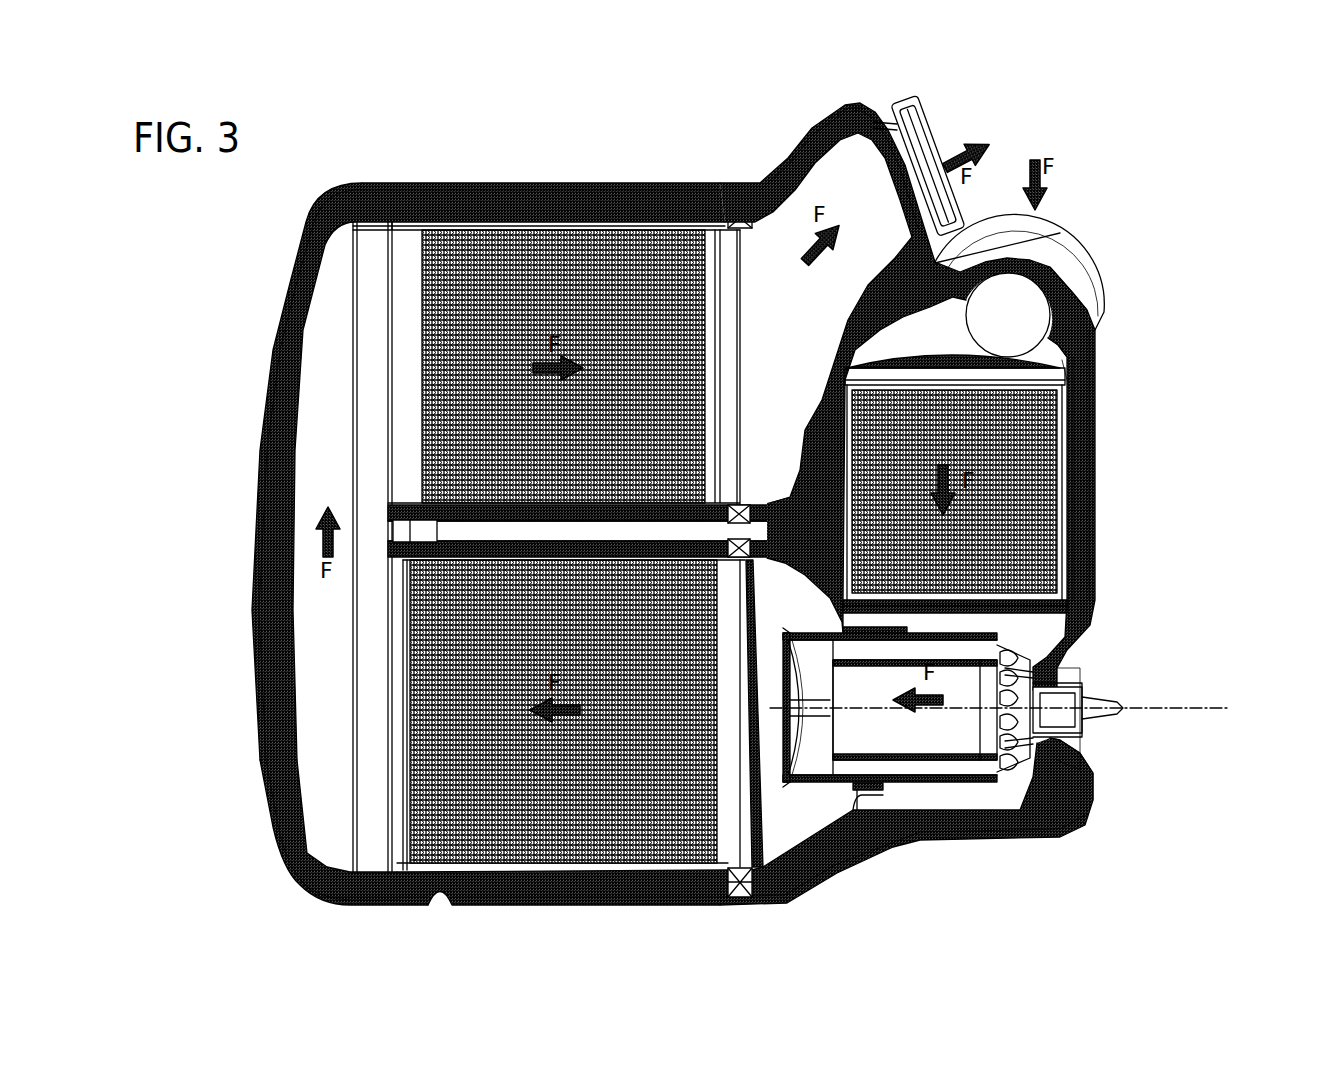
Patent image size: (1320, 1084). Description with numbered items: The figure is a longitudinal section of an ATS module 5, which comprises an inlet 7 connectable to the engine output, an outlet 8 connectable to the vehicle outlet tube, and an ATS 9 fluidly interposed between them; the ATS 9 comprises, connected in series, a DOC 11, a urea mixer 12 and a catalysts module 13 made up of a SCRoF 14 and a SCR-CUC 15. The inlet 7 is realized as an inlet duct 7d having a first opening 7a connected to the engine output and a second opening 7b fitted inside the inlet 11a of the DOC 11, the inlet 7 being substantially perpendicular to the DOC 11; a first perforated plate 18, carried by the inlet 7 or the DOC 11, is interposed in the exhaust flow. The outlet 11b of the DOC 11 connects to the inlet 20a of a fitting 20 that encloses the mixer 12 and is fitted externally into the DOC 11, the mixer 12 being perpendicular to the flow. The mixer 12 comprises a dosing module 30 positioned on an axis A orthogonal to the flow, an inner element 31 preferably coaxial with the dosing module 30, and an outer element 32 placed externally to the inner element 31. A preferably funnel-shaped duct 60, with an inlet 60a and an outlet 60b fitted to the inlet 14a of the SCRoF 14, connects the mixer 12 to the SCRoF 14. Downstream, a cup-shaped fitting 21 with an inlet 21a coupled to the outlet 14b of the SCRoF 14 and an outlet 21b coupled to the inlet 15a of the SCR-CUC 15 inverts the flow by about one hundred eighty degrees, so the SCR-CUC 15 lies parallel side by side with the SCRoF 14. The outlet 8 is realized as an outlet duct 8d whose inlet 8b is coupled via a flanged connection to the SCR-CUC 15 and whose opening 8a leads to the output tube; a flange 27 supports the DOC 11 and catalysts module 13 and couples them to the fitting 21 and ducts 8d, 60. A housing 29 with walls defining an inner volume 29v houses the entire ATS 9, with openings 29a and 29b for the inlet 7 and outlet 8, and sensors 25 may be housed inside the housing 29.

The ATS module 5 is at (1168, 478).
The inlet 7 is at (1072, 235).
The first opening 7a is at (1010, 300).
The second opening 7b is at (1067, 368).
The inlet duct 7d is at (1088, 320).
The outlet 8 is at (945, 130).
The opening 8a is at (930, 115).
The inlet of duct 8b is at (768, 200).
The outlet duct 8d is at (803, 125).
The ATS 9 is at (1075, 468).
The DOC 11 is at (1045, 505).
The inlet of DOC 11a is at (1070, 382).
The outlet of DOC 11b is at (1067, 598).
The urea mixer 12 is at (978, 800).
The catalysts module 13 is at (678, 880).
The SCRoF 14 is at (575, 822).
The inlet of SCRoF 14a is at (757, 882).
The outlet of SCRoF 14b is at (390, 870).
The SCR-CUC 15 is at (528, 233).
The inlet of SCR-CUC 15a is at (398, 228).
The first perforated plate 18 is at (900, 372).
The fitting 20 is at (1095, 805).
The inlet of fitting 20a is at (1098, 612).
The fitting 21 is at (276, 712).
The inlet of fitting 21a is at (347, 903).
The outlet of fitting 21b is at (366, 215).
The sensors 25 is at (457, 537).
The flange 27 is at (740, 212).
The housing 29 is at (272, 378).
The opening 29a is at (1100, 288).
The opening 29b is at (855, 100).
The inner volume 29v is at (563, 205).
The dosing module 30 is at (1100, 683).
The inner element 31 is at (960, 655).
The outer element 32 is at (805, 628).
The duct 60 is at (843, 872).
The inlet of duct 60a is at (880, 790).
The outlet of duct 60b is at (775, 540).
The axis A is at (1130, 712).